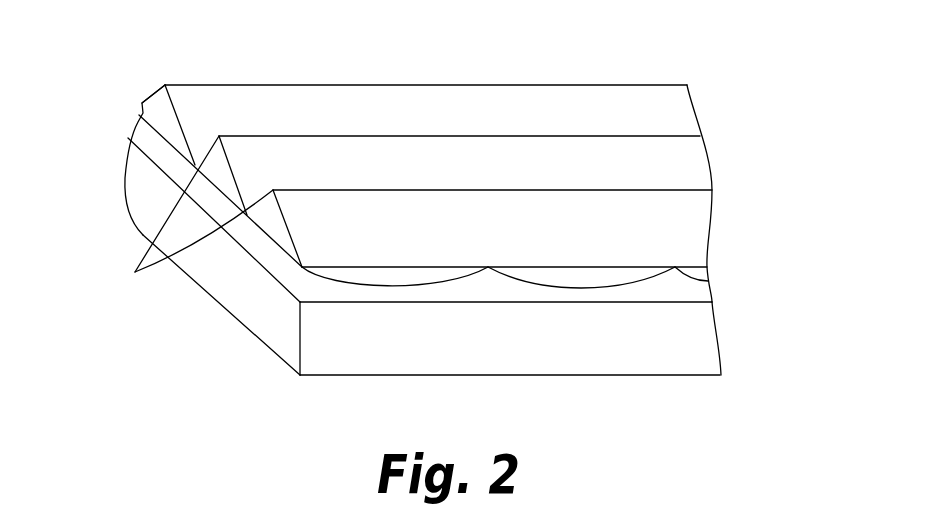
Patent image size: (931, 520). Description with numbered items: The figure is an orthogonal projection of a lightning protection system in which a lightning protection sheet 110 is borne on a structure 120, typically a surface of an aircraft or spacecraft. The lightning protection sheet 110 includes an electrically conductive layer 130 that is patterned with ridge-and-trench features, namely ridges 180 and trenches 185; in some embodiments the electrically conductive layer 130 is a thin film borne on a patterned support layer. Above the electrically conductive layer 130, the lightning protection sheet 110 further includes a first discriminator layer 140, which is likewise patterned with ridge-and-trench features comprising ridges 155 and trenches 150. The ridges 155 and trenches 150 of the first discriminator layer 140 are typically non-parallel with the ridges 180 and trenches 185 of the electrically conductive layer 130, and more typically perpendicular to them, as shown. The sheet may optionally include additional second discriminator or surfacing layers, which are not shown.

The lightning protection sheet 110 is at (722, 83).
The structure 120 is at (253, 303).
The electrically conductive layer 130 is at (138, 130).
The first discriminator layer 140 is at (162, 102).
The trenches 150 is at (181, 215).
The ridges 155 is at (340, 190).
The ridges 180 is at (488, 268).
The trenches 185 is at (402, 289).